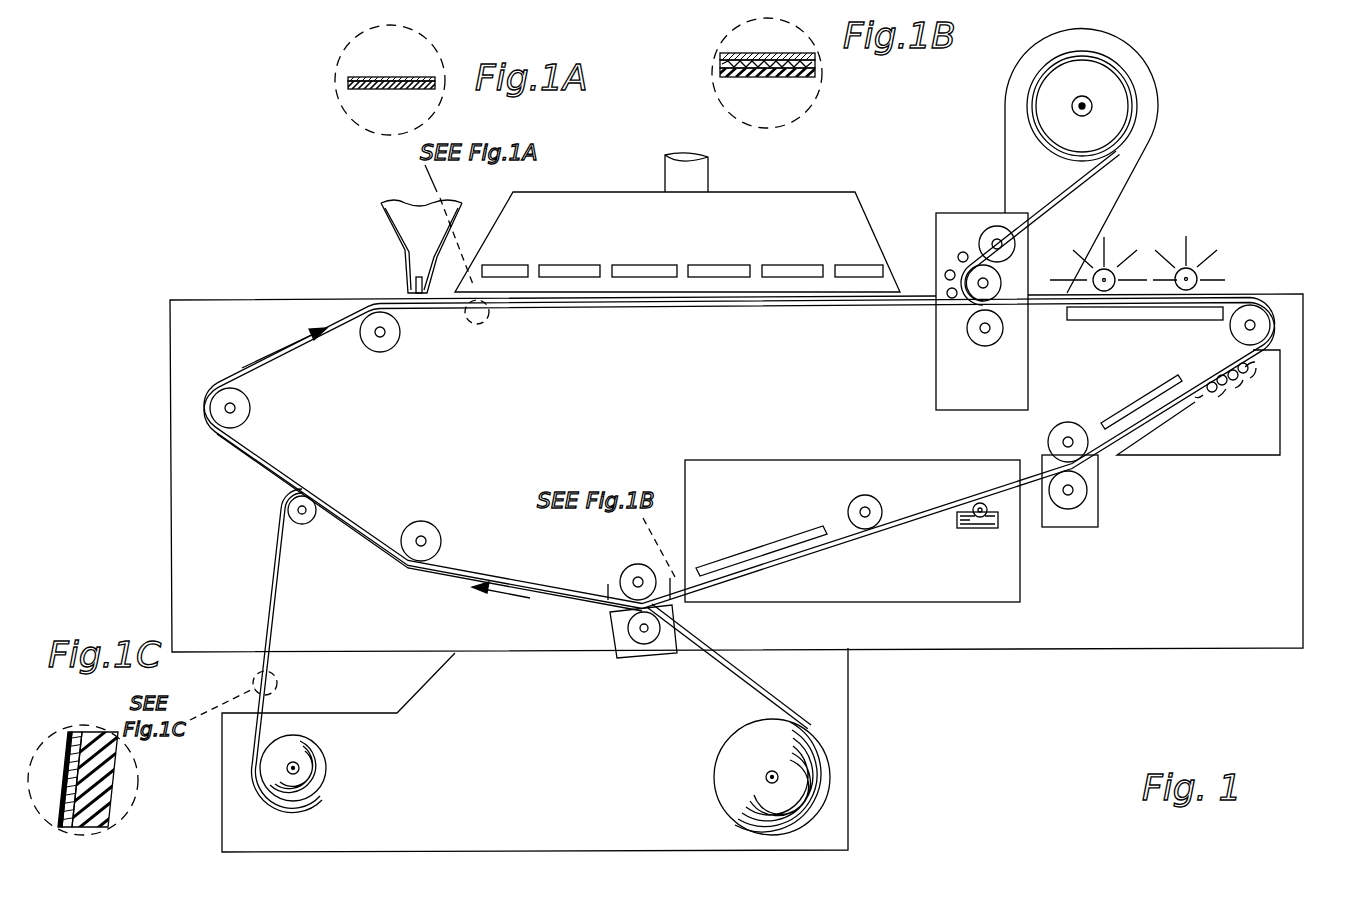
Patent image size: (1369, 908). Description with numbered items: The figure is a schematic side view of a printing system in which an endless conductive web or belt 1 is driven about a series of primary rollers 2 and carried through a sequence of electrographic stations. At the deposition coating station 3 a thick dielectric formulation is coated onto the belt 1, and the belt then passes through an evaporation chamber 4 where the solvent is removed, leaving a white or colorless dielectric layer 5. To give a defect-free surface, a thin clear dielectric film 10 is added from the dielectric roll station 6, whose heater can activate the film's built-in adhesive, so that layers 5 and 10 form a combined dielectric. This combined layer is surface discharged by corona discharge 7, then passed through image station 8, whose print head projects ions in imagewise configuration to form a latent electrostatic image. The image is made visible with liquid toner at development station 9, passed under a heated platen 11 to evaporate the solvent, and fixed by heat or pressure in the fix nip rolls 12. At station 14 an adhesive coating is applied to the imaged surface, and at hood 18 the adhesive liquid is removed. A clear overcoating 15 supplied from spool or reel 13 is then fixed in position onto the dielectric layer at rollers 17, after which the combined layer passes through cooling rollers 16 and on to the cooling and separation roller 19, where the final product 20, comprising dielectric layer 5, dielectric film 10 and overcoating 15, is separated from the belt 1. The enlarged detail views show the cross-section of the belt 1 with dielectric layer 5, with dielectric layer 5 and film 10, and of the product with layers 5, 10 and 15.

In FIG. 1, the conductive web or belt 1 is at (337, 330).
In FIG. 1A, the conductive web or belt 1 is at (396, 89).
In FIG. 1B, the conductive web or belt 1 is at (790, 55).
In FIG. 1, the primary rollers 2 is at (251, 410).
In FIG. 1, the deposition coating station 3 is at (398, 265).
In FIG. 1, the evaporation chamber 4 is at (573, 210).
In FIG. 1A, the dielectric layer 5 is at (385, 77).
In FIG. 1B, the dielectric layer 5 is at (720, 58).
In FIG. 1C, the dielectric layer 5 is at (70, 735).
In FIG. 1, the dielectric roll station 6 is at (970, 218).
In FIG. 1, the corona discharge 7 is at (1106, 268).
In FIG. 1, the image station 8 is at (1188, 266).
In FIG. 1, the development station 9 is at (1255, 388).
In FIG. 1, the dielectric film 10 is at (1068, 197).
In FIG. 1B, the dielectric film 10 is at (720, 72).
In FIG. 1C, the dielectric film 10 is at (82, 732).
In FIG. 1, the heated platen 11 is at (1138, 406).
In FIG. 1, the fix nip rolls 12 is at (1072, 423).
In FIG. 1, the spool or reel 13 is at (795, 745).
In FIG. 1, the adhesive coating station 14 is at (978, 527).
In FIG. 1, the clear overcoating 15 is at (760, 698).
In FIG. 1C, the clear overcoating 15 is at (108, 792).
In FIG. 1, the cooling rollers 16 is at (438, 532).
In FIG. 1, the fixing rollers 17 is at (636, 566).
In FIG. 1, the hood 18 is at (822, 470).
In FIG. 1, the cooling and separation roller 19 is at (310, 524).
In FIG. 1, the final product 20 is at (283, 602).